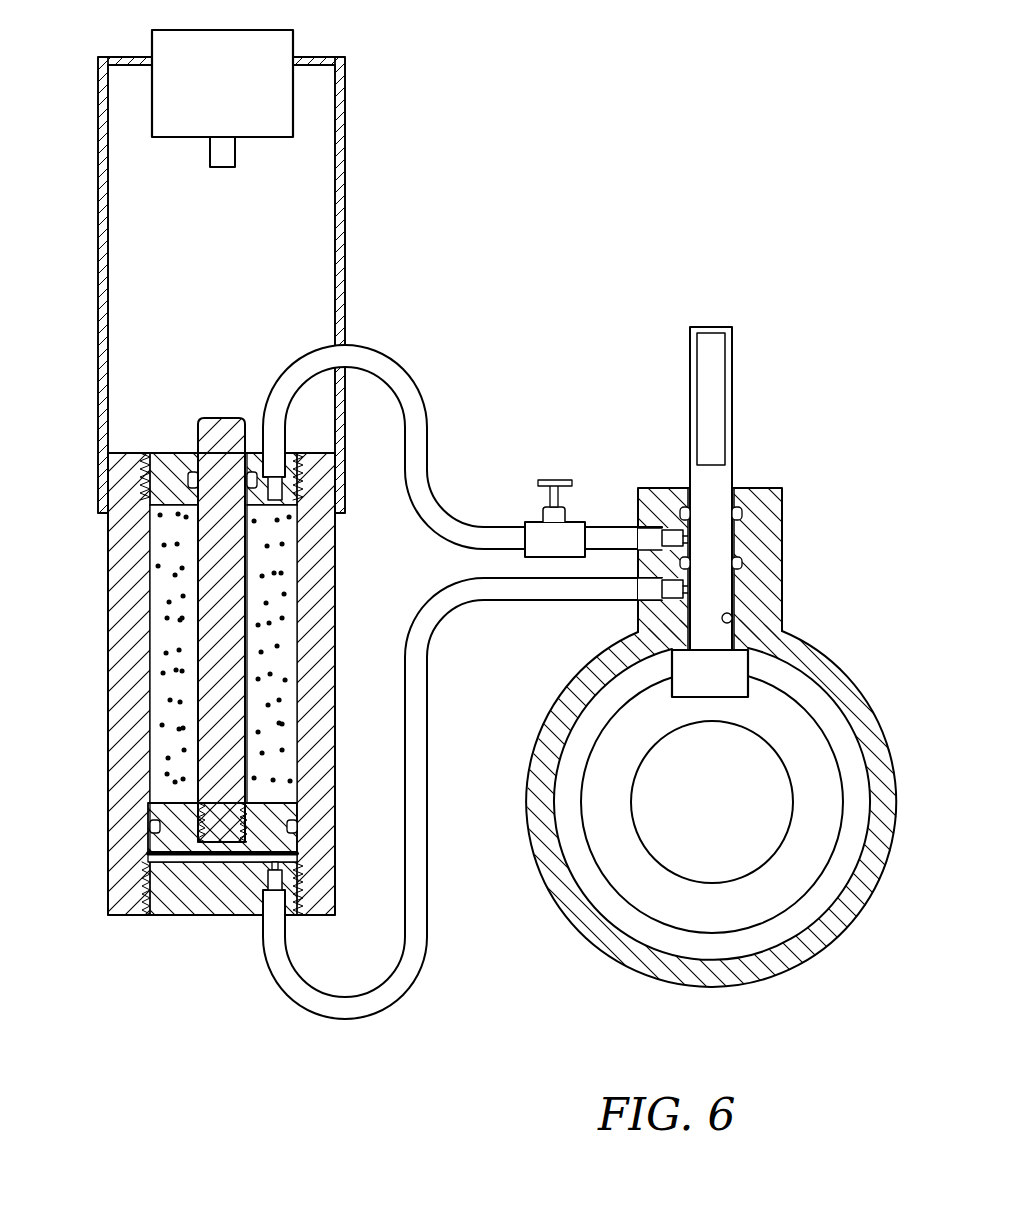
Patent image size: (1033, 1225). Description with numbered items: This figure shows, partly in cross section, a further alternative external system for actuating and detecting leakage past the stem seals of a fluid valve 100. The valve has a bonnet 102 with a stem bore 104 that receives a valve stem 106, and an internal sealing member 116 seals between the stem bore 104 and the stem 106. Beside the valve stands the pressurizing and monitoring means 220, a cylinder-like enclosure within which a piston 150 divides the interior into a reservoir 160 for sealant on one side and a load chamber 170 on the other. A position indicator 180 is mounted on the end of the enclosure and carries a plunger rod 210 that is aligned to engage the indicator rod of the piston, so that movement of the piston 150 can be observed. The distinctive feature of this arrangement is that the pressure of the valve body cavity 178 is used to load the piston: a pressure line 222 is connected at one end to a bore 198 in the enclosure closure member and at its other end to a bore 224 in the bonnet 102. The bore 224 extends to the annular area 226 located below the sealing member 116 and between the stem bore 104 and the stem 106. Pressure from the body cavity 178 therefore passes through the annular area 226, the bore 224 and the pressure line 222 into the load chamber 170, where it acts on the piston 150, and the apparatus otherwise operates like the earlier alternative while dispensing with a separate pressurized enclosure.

The fluid valve 100 is at (722, 657).
The bonnet 102 is at (773, 552).
The stem bore 104 is at (730, 612).
The valve stem 106 is at (710, 627).
The internal sealing member 116 is at (782, 512).
The piston 150 is at (150, 805).
The reservoir 160 is at (160, 617).
The load chamber 170 is at (150, 853).
The valve body cavity 178 is at (797, 690).
The position indicator 180 is at (280, 42).
The bore 198 is at (263, 894).
The plunger rod 210 is at (215, 157).
The pressurizing and monitoring means 220 is at (402, 275).
The pressure line 222 is at (345, 1022).
The bore 224 is at (640, 600).
The annular area 226 is at (736, 578).